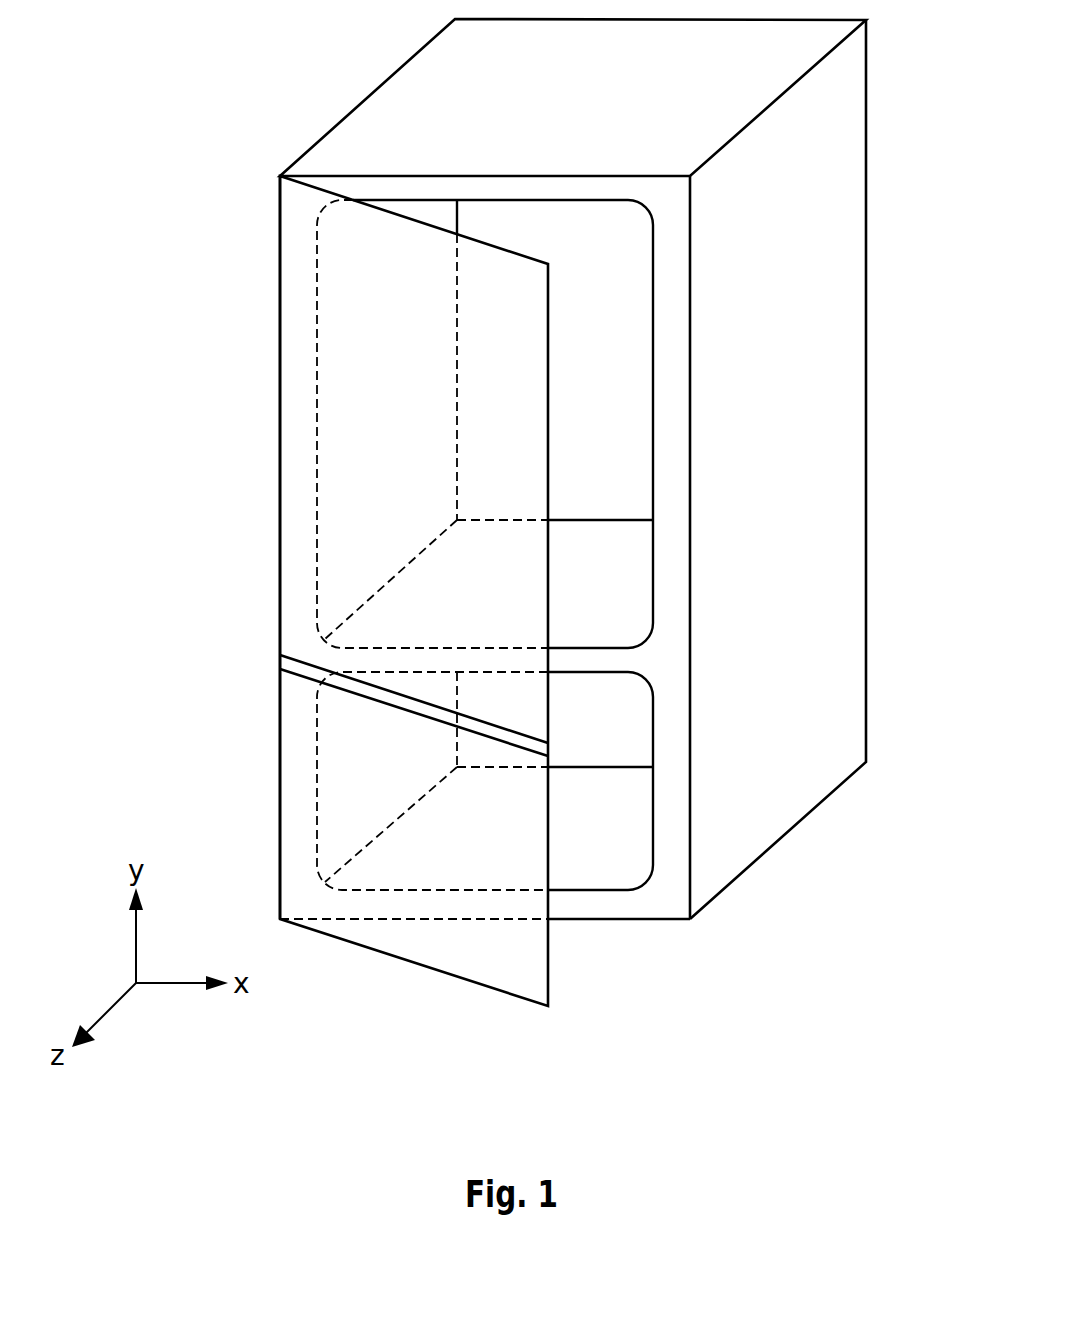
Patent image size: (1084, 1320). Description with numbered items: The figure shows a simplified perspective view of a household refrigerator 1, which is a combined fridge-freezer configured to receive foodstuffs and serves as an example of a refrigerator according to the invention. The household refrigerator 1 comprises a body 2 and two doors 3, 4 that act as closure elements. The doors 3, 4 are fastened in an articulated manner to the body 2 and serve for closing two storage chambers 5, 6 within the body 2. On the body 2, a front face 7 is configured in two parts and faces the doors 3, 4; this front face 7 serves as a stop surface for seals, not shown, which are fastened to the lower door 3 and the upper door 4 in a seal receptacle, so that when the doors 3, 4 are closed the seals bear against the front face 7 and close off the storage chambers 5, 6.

The household refrigerator 1 is at (198, 292).
The body 2 is at (843, 378).
The lower door 3 is at (482, 957).
The upper door 4 is at (363, 237).
The storage chamber 5 is at (622, 735).
The storage chamber 6 is at (620, 390).
The front face 7 is at (672, 293).